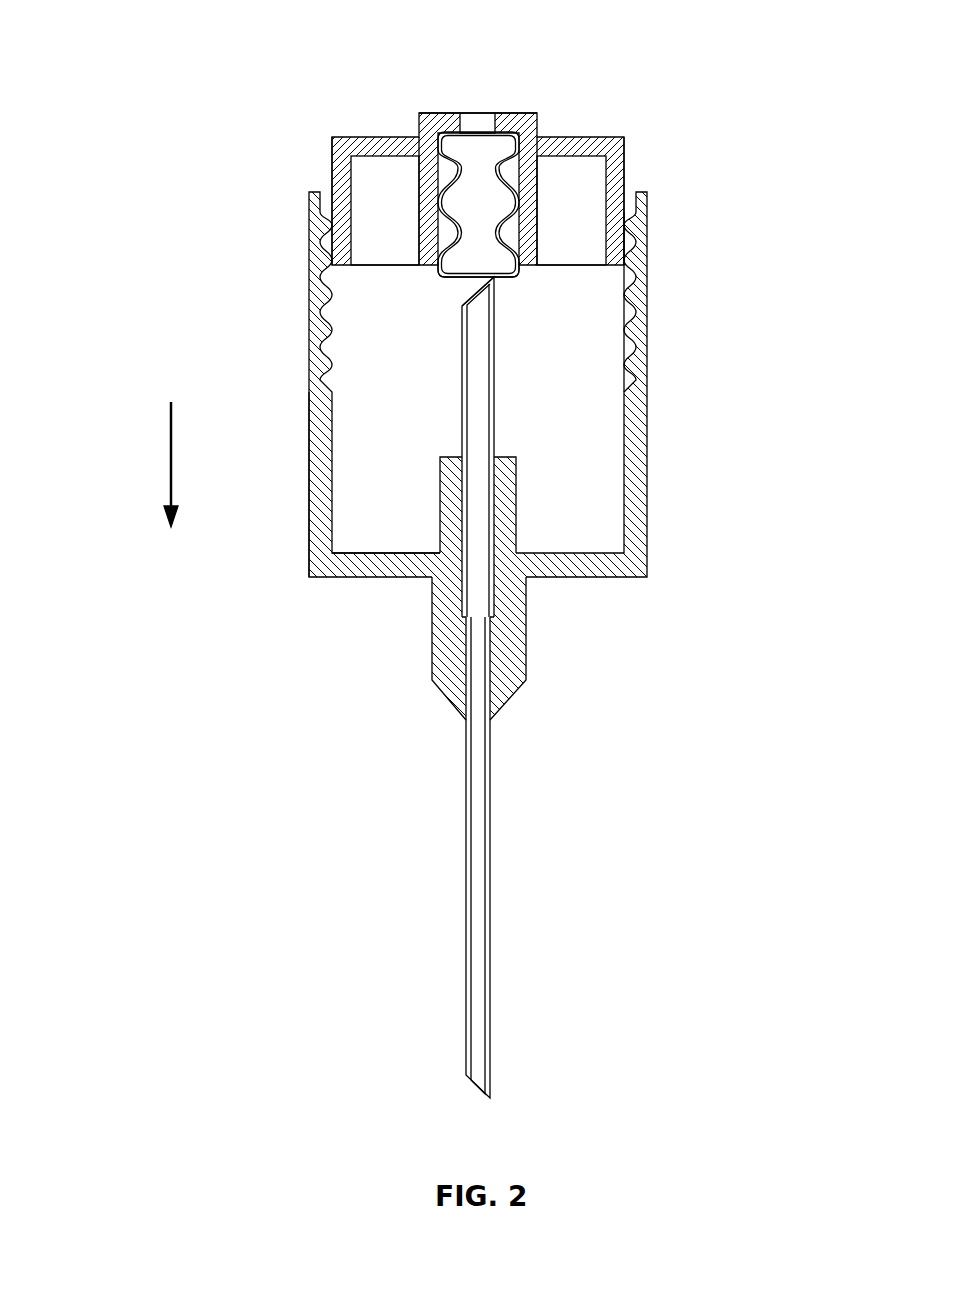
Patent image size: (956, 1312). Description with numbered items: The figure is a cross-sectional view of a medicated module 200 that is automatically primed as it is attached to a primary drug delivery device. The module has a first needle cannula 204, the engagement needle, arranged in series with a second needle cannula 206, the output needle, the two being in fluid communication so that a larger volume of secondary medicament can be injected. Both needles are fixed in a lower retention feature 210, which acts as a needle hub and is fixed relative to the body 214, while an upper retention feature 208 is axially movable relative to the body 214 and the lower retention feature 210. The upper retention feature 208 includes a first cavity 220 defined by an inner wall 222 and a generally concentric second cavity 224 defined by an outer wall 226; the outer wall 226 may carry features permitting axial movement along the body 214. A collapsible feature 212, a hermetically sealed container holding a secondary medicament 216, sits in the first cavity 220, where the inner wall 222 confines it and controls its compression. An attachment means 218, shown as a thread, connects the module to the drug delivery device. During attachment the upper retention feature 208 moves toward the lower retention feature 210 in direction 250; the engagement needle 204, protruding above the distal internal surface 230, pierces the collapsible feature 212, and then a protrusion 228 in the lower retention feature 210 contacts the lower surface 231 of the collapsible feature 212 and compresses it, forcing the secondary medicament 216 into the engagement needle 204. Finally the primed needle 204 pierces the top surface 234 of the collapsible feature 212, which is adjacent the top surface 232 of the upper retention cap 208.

The medicated module 200 is at (242, 53).
The first needle cannula 204 is at (497, 427).
The second needle cannula 206 is at (490, 962).
The upper retention feature 208 is at (363, 111).
The lower retention feature 210 is at (433, 638).
The collapsible feature 212 is at (436, 271).
The body 214 is at (310, 490).
The secondary medicament 216 is at (482, 234).
The attachment means 218 is at (320, 224).
The first cavity 220 is at (450, 234).
The inner wall 222 is at (428, 178).
The second cavity 224 is at (390, 235).
The outer wall 226 is at (332, 146).
The protrusion 228 is at (517, 505).
The distal internal surface 230 is at (358, 554).
The lower surface 231 is at (457, 282).
The top surface 232 is at (519, 110).
The top surface 234 is at (477, 128).
The direction 250 is at (170, 464).